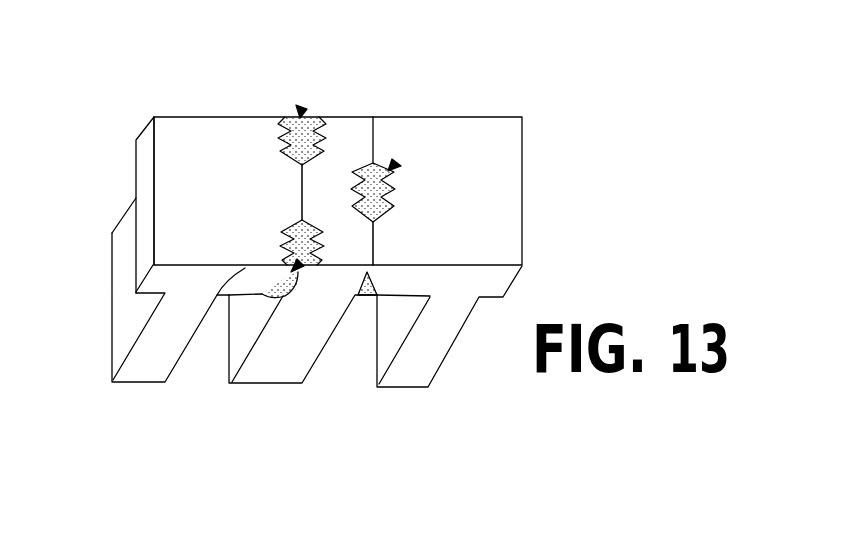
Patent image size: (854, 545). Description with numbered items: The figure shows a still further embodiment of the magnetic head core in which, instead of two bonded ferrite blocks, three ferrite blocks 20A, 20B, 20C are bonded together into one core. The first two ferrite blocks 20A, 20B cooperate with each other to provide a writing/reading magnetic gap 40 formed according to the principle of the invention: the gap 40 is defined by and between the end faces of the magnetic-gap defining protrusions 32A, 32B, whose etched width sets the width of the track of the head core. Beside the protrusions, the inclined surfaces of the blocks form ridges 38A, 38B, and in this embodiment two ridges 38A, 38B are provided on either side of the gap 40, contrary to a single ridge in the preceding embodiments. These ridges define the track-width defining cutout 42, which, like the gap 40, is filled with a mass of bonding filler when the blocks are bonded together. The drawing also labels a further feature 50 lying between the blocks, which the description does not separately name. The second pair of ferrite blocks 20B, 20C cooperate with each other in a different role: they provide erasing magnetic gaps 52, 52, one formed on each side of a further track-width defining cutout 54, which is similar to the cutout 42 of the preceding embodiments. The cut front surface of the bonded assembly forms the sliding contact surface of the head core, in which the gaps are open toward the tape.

The ferrite block 20A is at (143, 362).
The ferrite block 20B is at (279, 367).
The ferrite block 20C is at (422, 370).
The magnetic-gap defining protrusion 32A is at (293, 203).
The magnetic-gap defining protrusion 32B is at (310, 200).
The ridge 38A is at (282, 131).
The ridge 38B is at (327, 130).
The magnetic gap 40 is at (303, 175).
The track-width defining cutout 42 is at (302, 106).
The aperture 50 is at (345, 190).
The erasing magnetic gap 52 is at (375, 138).
The track-width defining cutout 54 is at (400, 160).